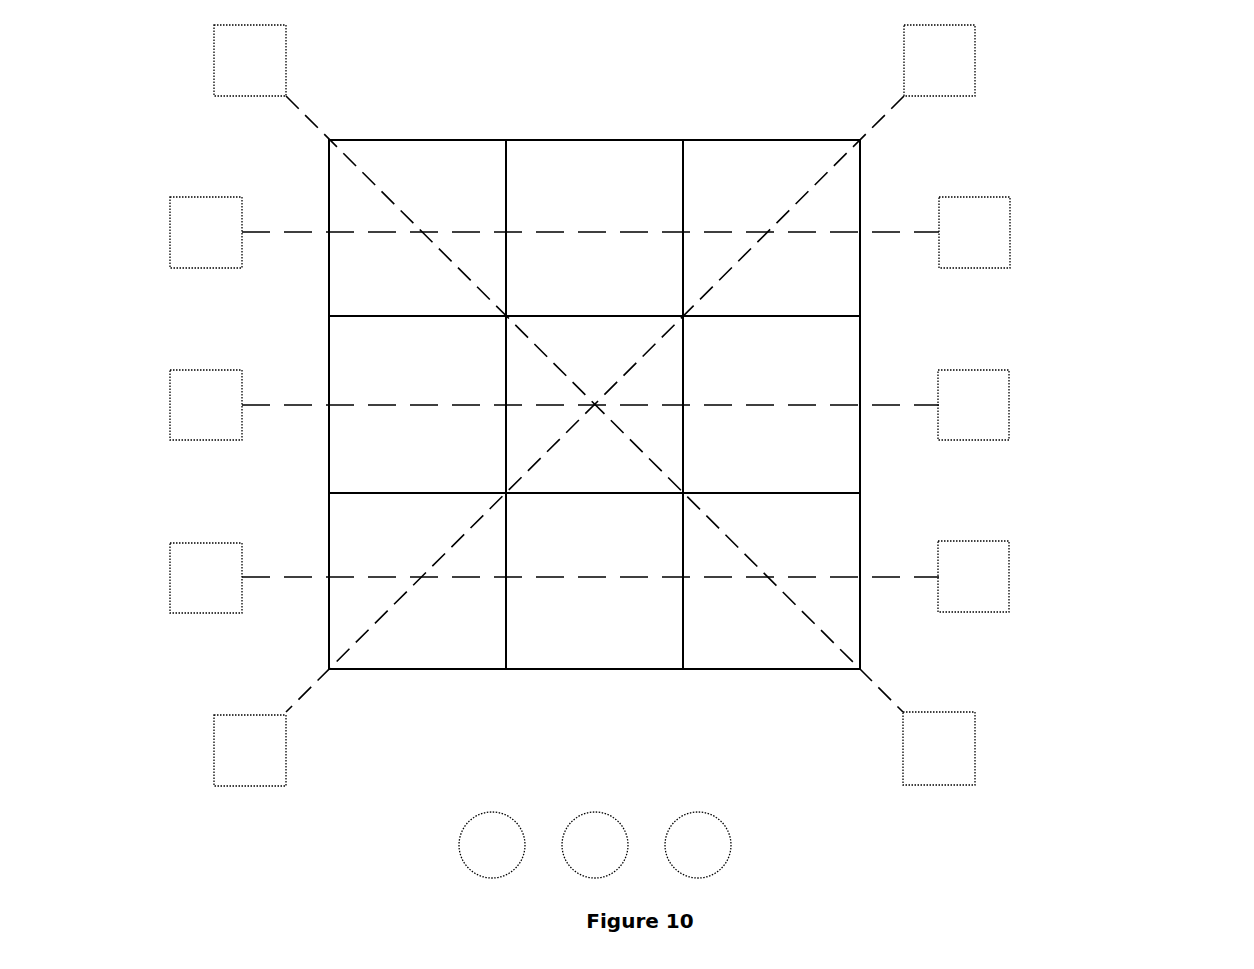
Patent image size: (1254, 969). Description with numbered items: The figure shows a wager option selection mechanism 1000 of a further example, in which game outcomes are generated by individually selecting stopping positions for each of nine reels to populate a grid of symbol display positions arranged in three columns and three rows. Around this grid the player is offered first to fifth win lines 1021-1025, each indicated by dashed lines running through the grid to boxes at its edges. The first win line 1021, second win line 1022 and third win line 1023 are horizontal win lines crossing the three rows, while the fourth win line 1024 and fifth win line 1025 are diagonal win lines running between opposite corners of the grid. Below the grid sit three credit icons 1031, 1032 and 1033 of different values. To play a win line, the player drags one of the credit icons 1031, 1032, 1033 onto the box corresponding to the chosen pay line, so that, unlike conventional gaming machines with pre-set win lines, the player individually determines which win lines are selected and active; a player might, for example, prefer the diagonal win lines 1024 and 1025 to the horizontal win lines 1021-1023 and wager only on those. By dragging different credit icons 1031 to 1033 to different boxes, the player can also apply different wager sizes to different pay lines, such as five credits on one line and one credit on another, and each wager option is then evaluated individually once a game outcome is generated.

The wager option selection mechanism 1000 is at (1167, 185).
The first win line 1021 is at (170, 407).
The second win line 1022 is at (170, 232).
The third win line 1023 is at (170, 578).
The fourth win line 1024 is at (214, 55).
The fifth win line 1025 is at (975, 54).
The credit icon 1031 is at (491, 812).
The credit icon 1032 is at (595, 812).
The credit icon 1033 is at (697, 812).